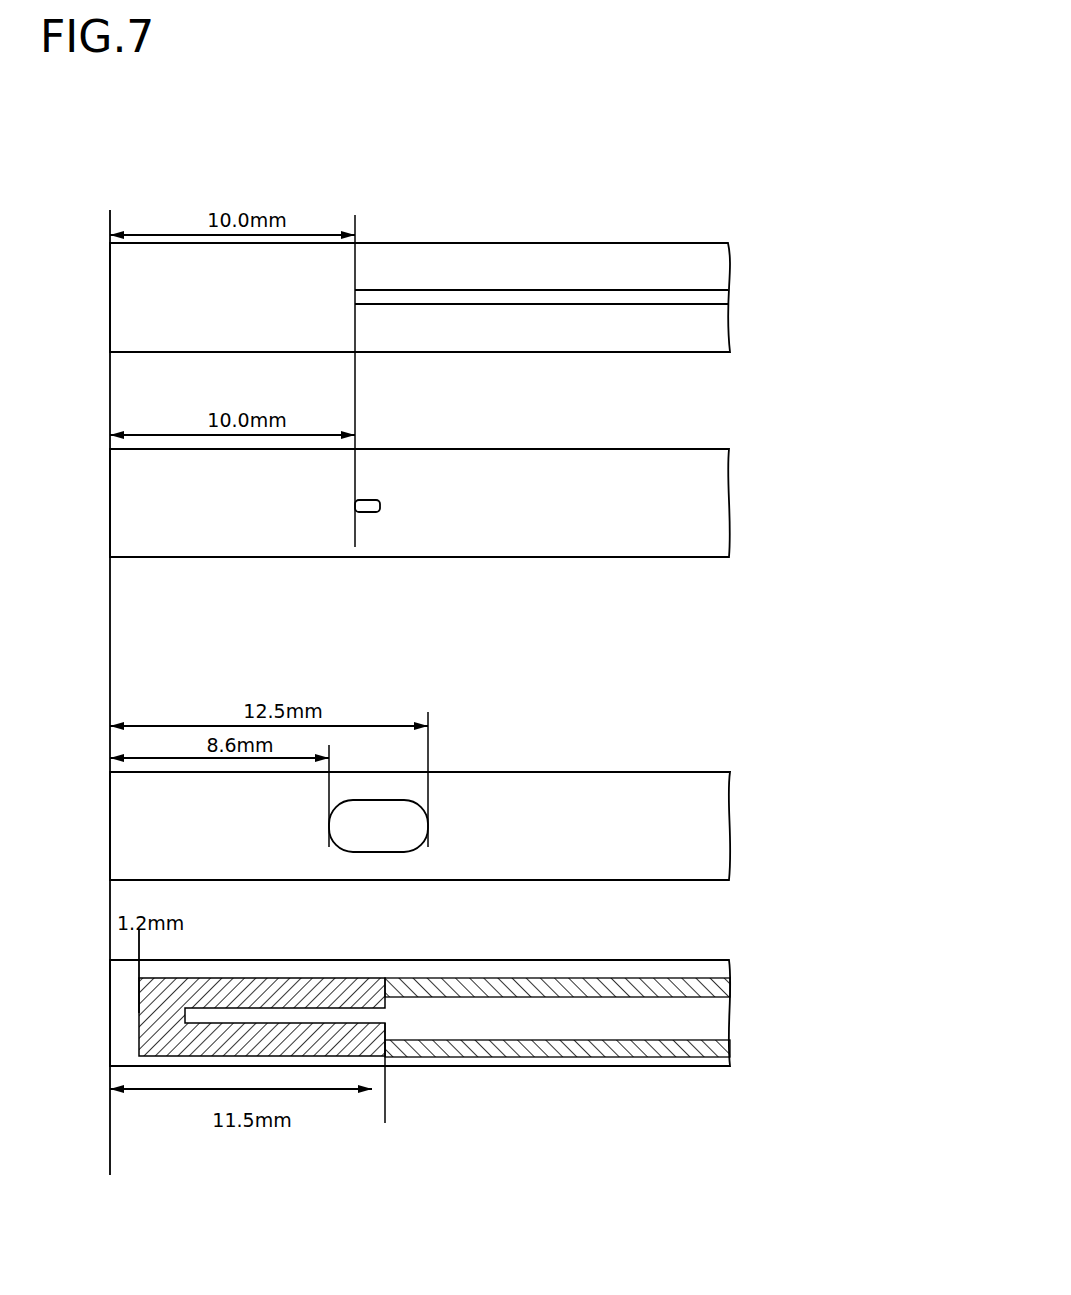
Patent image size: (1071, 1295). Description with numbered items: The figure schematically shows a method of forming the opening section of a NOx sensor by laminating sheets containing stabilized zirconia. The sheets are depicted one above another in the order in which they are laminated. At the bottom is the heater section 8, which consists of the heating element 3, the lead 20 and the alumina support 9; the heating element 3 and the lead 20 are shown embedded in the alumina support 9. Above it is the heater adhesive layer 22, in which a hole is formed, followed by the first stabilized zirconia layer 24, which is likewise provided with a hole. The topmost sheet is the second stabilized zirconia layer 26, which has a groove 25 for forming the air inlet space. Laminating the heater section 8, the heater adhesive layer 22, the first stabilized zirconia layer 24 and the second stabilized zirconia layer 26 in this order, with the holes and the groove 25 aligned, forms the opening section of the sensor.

The second stabilized zirconia layer 26 is at (522, 252).
The groove 25 is at (707, 302).
The first stabilized zirconia layer 24 is at (726, 430).
The heater adhesive layer 22 is at (720, 752).
The heater section 8 is at (499, 972).
The heating element 3 is at (305, 978).
The lead 20 is at (505, 978).
The alumina support 9 is at (700, 1020).